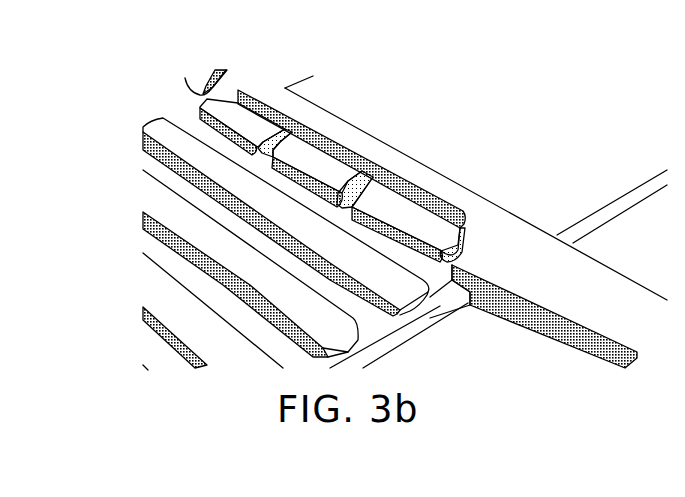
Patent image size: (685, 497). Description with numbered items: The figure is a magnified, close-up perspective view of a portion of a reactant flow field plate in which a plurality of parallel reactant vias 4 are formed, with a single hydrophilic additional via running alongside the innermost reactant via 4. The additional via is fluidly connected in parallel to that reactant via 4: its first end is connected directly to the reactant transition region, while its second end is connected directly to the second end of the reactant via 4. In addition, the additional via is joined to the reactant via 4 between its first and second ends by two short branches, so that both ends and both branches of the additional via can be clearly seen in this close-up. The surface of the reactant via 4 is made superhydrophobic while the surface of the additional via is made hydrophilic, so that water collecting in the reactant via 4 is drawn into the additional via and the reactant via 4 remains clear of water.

The reactant via 4 is at (257, 160).